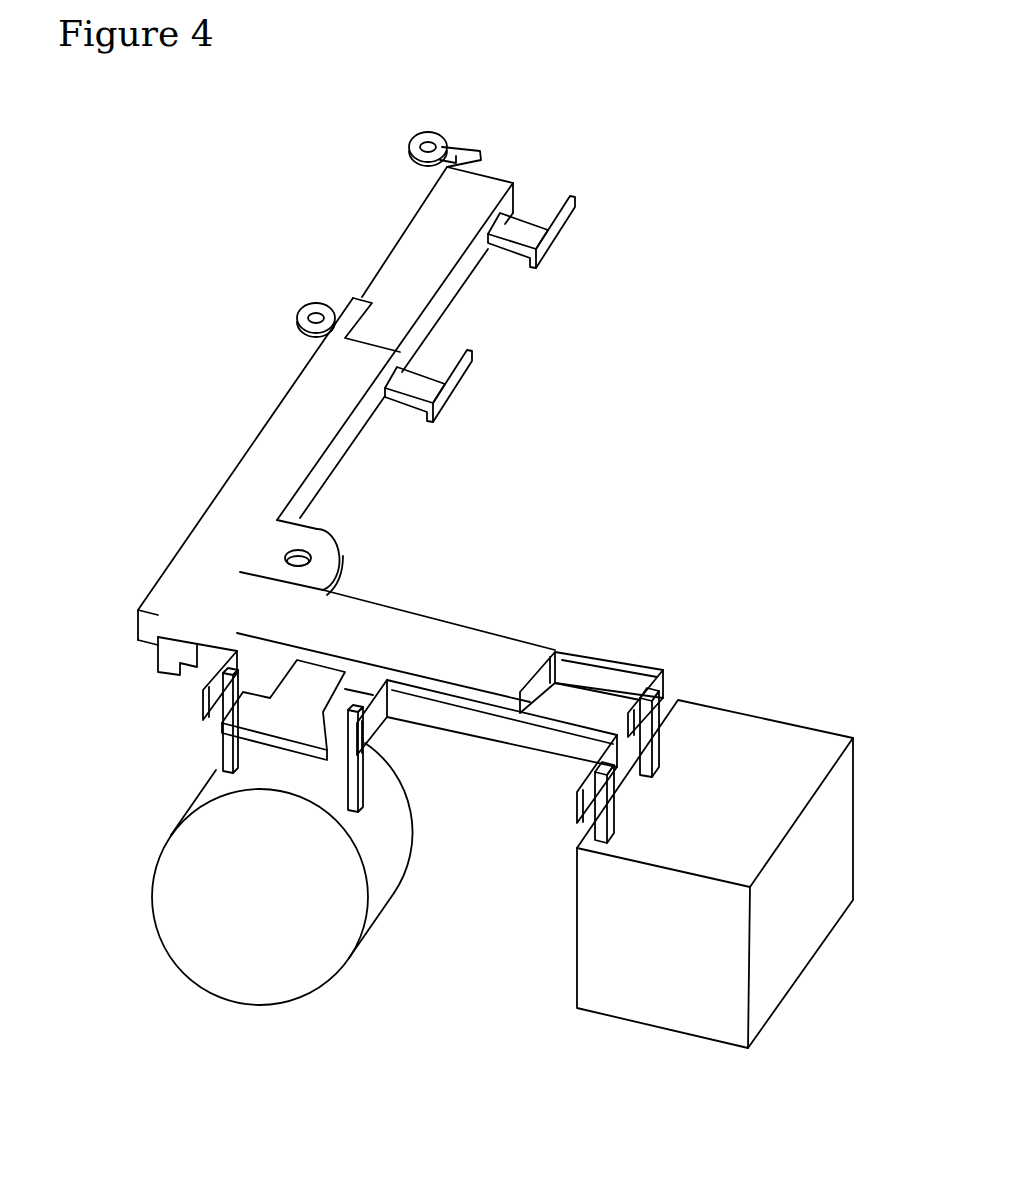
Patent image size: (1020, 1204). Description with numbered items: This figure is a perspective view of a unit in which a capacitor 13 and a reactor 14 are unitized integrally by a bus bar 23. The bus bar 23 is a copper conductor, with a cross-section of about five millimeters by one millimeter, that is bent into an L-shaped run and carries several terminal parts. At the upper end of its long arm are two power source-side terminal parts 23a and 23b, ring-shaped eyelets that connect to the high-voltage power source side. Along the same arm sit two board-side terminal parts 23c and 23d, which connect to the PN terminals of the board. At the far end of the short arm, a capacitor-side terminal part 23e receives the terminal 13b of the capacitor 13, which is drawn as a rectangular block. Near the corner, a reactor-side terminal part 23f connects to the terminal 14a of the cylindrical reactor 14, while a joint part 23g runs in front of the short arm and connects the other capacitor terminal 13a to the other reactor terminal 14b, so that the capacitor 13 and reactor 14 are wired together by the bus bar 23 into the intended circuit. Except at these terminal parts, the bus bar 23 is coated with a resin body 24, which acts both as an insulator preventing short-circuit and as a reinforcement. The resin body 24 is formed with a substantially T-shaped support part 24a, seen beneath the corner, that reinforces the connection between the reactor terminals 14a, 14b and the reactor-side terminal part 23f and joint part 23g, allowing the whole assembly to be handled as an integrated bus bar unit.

The capacitor 13 is at (715, 861).
The terminal of the capacitor 13a is at (612, 820).
The terminal of the capacitor 13b is at (650, 752).
The reactor 14 is at (285, 836).
The terminal of the reactor 14a is at (235, 775).
The terminal of the reactor 14b is at (357, 783).
The bus bar 23 is at (526, 226).
The power source-side terminal part 23a is at (316, 304).
The power source-side terminal part 23b is at (430, 143).
The board-side terminal part 23c is at (470, 385).
The board-side terminal part 23d is at (560, 236).
The capacitor-side terminal part 23e is at (600, 645).
The reactor-side terminal part 23f is at (185, 680).
The joint part 23g is at (515, 735).
The resin body 24 is at (340, 445).
The support part 24a is at (240, 733).